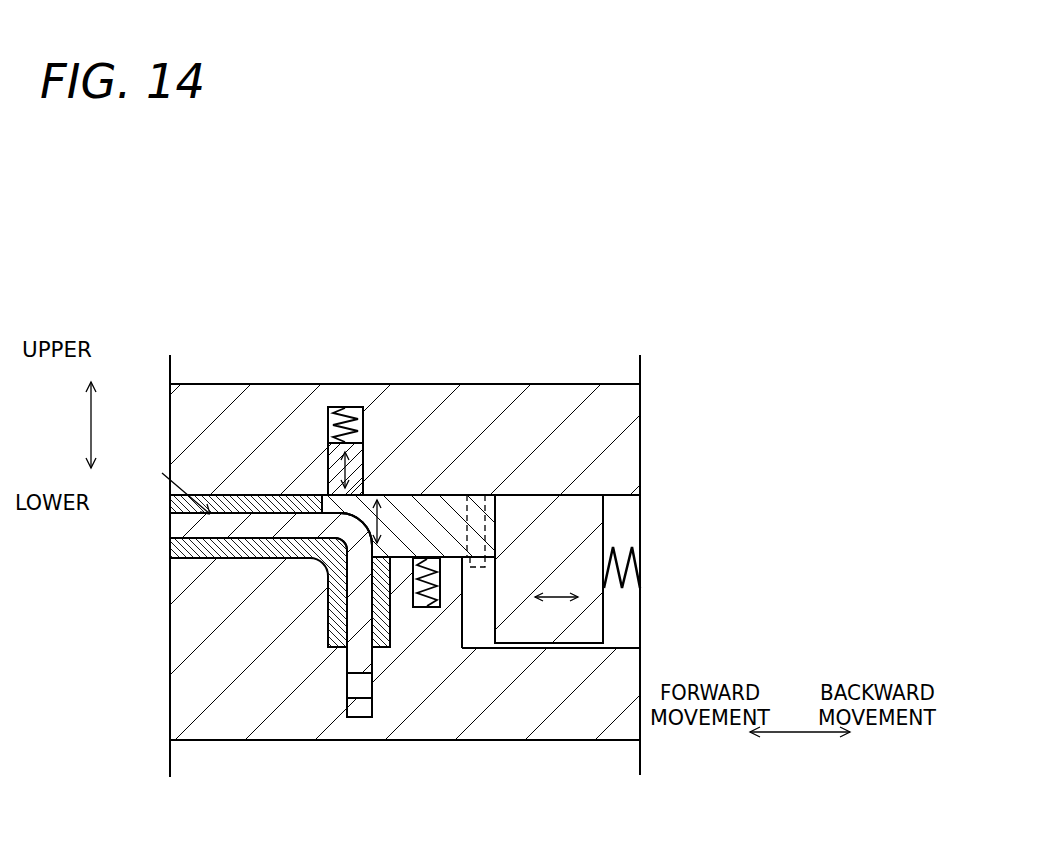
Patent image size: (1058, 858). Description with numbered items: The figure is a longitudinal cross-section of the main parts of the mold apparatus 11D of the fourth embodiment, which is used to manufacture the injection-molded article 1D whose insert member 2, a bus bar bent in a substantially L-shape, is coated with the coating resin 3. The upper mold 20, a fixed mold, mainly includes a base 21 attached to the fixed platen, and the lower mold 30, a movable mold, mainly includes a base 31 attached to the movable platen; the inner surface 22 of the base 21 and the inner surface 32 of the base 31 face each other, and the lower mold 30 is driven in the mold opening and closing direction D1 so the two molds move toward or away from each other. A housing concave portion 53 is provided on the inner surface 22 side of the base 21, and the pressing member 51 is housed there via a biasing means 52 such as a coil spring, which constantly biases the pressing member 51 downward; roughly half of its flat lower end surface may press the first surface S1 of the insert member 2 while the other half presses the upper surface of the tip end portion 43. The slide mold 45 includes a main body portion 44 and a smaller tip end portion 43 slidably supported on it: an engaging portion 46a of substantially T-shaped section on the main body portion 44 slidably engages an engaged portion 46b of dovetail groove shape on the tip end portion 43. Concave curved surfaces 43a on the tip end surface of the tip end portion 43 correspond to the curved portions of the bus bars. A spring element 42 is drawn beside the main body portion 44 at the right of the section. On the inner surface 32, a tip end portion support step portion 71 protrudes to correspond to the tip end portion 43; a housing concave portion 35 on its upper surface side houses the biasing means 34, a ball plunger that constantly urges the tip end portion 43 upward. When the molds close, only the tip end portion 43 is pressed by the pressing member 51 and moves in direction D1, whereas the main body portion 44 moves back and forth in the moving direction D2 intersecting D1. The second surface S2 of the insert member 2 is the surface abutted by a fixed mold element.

The injection-molded article 1D is at (247, 571).
The insert member 2 is at (265, 527).
The coating resin 3 is at (242, 510).
The mold apparatus 11D is at (695, 400).
The upper mold 20 is at (440, 447).
The base 21 is at (620, 444).
The inner surface 22 is at (628, 506).
The lower mold 30 is at (442, 688).
The base 31 is at (442, 668).
The inner surface 32 is at (628, 637).
The biasing means 34 is at (403, 598).
The housing concave portion 35 is at (432, 612).
The return spring 42 is at (630, 586).
The tip end portion 43 is at (411, 514).
The concave curved surface 43a is at (345, 520).
The main body portion 44 is at (542, 512).
The slide mold 45 is at (441, 485).
The engaging portion 46a is at (495, 567).
The engaged portion 46b is at (495, 527).
The pressing member 51 is at (336, 421).
The biasing means 52 is at (347, 407).
The housing concave portion 53 is at (335, 470).
The tip end portion support step portion 71 is at (457, 580).
The mold opening and closing direction D1 is at (95, 425).
The moving direction D2 is at (805, 735).
The first surface S1 is at (172, 483).
The second surface S2 is at (396, 526).